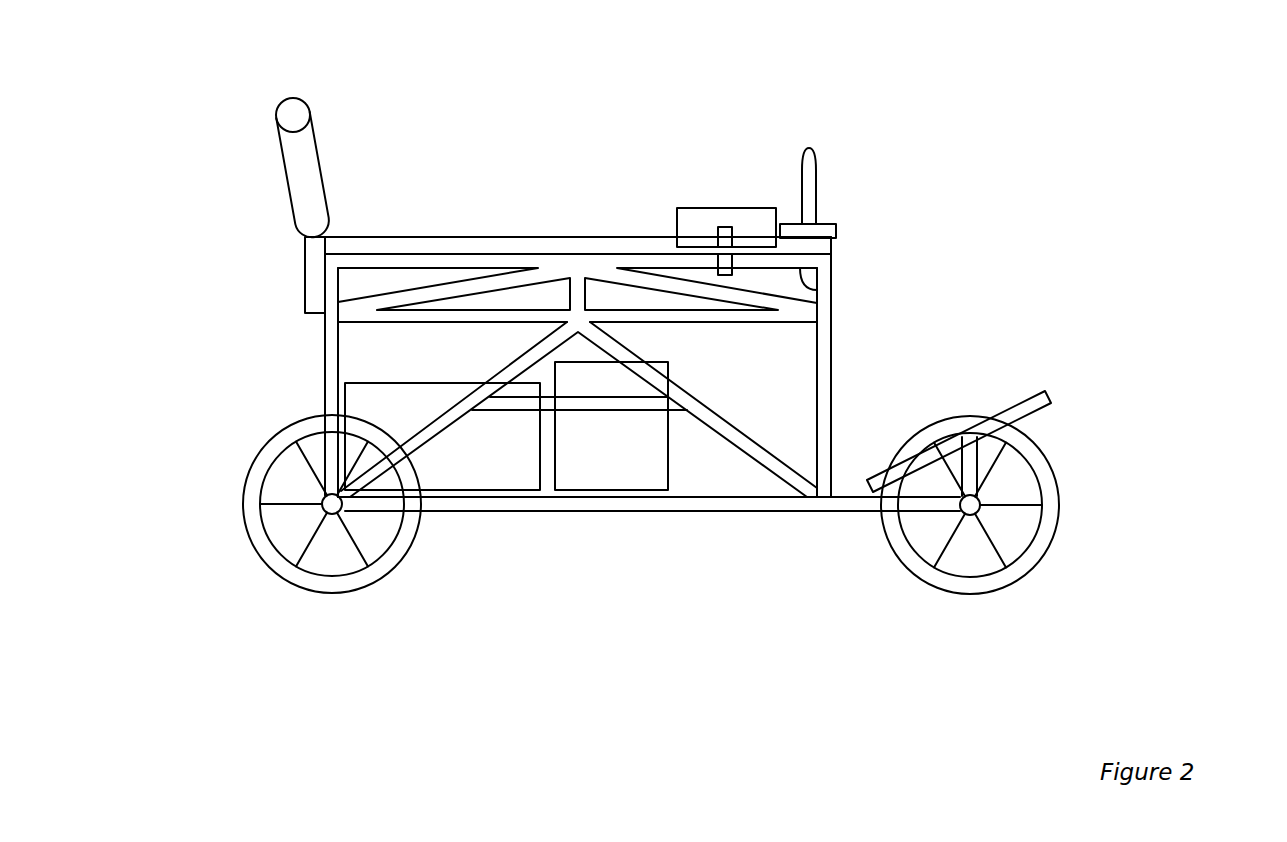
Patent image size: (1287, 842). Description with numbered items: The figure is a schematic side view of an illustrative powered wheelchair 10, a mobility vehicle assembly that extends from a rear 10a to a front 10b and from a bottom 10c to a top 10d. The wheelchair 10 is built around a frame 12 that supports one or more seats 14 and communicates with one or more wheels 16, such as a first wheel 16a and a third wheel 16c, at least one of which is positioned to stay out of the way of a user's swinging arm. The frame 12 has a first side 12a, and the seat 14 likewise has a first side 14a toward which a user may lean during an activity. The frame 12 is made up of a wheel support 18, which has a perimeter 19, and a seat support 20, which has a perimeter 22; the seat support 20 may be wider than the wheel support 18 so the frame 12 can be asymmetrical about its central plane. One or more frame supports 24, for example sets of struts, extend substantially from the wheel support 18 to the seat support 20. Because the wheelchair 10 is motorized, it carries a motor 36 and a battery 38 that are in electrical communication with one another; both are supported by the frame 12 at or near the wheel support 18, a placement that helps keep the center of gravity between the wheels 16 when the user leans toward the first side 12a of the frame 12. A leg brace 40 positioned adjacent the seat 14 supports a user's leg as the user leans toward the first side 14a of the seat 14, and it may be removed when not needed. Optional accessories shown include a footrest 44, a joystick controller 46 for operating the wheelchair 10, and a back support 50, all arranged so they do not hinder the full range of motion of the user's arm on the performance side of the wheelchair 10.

The wheelchair 10 is at (1062, 162).
The rear of the wheelchair 10a is at (235, 293).
The front of the wheelchair 10b is at (911, 338).
The bottom of the wheelchair 10c is at (738, 555).
The top of the wheelchair 10d is at (448, 95).
The frame 12 is at (323, 345).
The first side of the frame 12a is at (323, 388).
The seat 14 is at (405, 237).
The first side of the seat 14a is at (530, 237).
The wheels 16 is at (255, 458).
The first wheel 16a is at (250, 548).
The third wheel 16c is at (1047, 550).
The wheel support 18 is at (623, 512).
The perimeter of the wheel support 19 is at (520, 512).
The seat support 20 is at (770, 271).
The perimeter of the seat support 22 is at (368, 268).
The frame supports 24 is at (740, 405).
The motor 36 is at (405, 383).
The battery 38 is at (668, 466).
The leg brace 40 is at (705, 208).
The footrest 44 is at (1030, 392).
The joystick controller 46 is at (808, 153).
The back support 50 is at (280, 144).